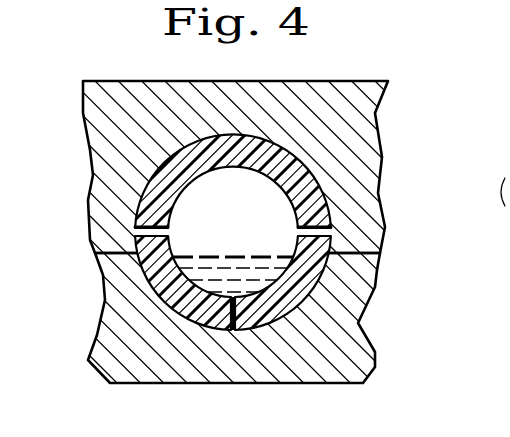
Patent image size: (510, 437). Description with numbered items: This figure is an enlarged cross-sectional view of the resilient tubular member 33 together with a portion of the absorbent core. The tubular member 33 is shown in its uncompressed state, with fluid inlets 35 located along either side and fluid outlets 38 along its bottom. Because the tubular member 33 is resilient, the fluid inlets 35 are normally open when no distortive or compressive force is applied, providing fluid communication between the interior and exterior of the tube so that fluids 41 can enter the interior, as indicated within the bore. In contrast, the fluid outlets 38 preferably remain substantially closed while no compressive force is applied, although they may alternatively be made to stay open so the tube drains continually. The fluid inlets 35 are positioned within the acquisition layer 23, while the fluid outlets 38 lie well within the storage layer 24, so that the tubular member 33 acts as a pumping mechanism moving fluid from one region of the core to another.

The acquisition layer 23 is at (112, 110).
The storage layer 24 is at (135, 340).
The tubular member 33 is at (283, 147).
The fluid inlets 35 is at (135, 231).
The fluid outlets 38 is at (253, 322).
The fluids 41 is at (203, 278).